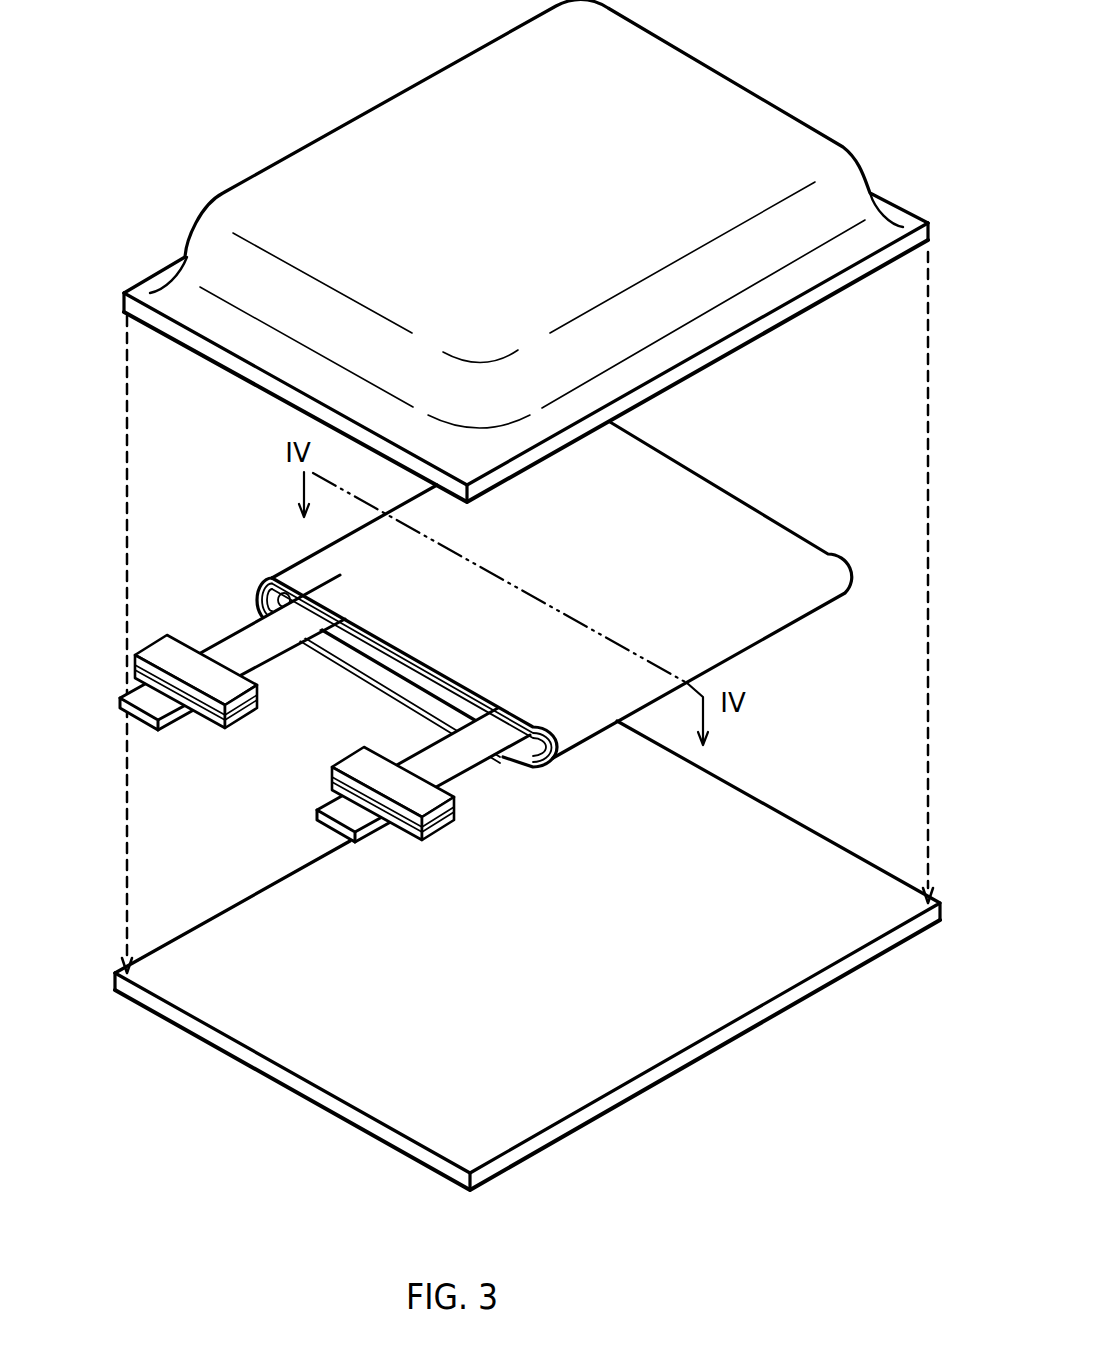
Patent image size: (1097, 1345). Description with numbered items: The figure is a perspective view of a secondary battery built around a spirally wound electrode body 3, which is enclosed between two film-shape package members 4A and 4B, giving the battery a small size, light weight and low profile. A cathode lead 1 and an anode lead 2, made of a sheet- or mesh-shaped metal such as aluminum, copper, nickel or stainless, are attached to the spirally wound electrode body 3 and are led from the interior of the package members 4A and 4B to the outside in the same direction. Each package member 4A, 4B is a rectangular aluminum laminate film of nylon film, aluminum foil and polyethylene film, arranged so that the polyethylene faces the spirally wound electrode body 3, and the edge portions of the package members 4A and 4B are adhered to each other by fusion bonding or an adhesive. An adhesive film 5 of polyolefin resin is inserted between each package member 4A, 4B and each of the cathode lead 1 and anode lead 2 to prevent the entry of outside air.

The cathode lead 1 is at (137, 694).
The anode lead 2 is at (336, 812).
The spirally wound electrode body 3 is at (442, 625).
The package member 4A is at (703, 90).
The package member 4B is at (783, 835).
The adhesive film 5 is at (366, 763).